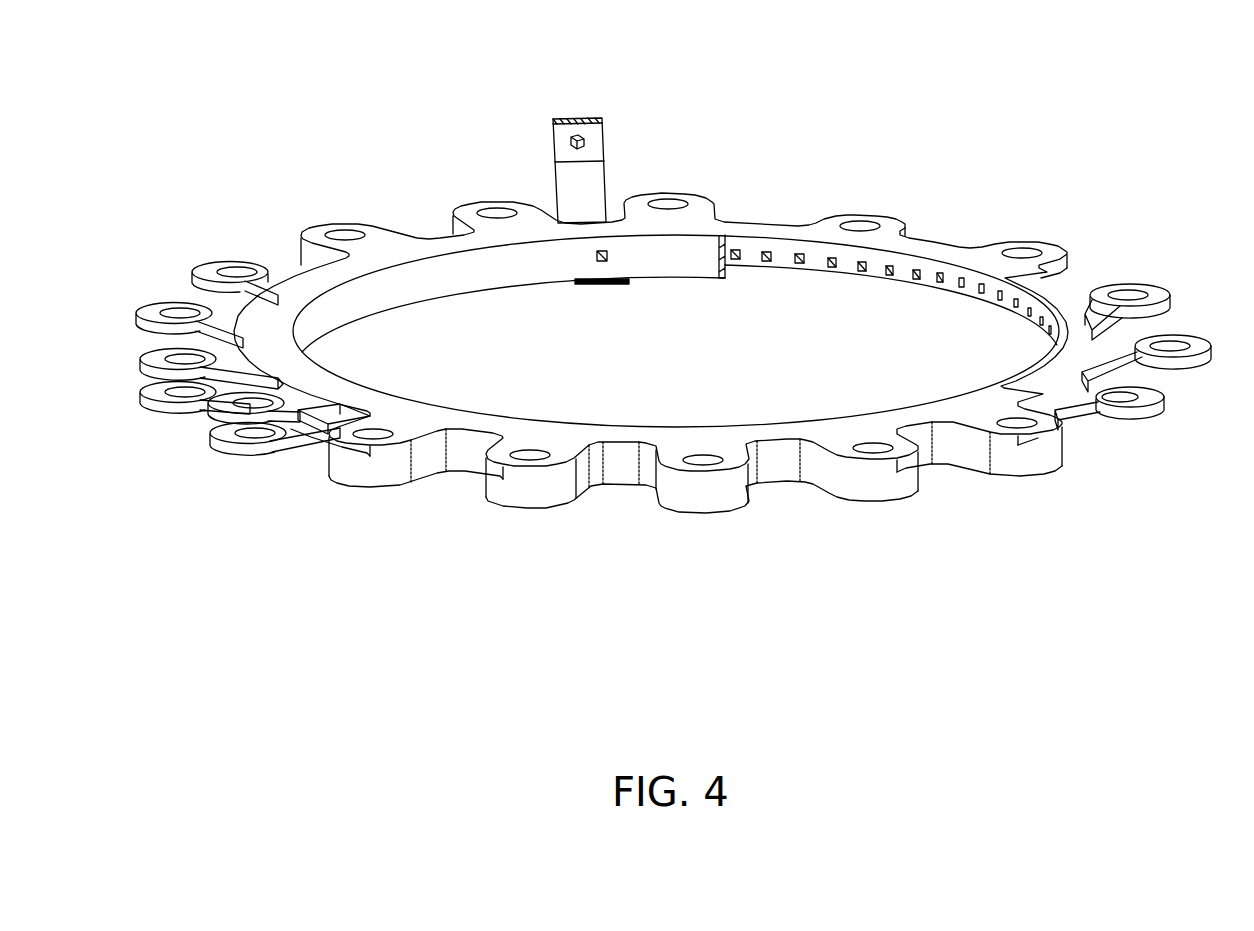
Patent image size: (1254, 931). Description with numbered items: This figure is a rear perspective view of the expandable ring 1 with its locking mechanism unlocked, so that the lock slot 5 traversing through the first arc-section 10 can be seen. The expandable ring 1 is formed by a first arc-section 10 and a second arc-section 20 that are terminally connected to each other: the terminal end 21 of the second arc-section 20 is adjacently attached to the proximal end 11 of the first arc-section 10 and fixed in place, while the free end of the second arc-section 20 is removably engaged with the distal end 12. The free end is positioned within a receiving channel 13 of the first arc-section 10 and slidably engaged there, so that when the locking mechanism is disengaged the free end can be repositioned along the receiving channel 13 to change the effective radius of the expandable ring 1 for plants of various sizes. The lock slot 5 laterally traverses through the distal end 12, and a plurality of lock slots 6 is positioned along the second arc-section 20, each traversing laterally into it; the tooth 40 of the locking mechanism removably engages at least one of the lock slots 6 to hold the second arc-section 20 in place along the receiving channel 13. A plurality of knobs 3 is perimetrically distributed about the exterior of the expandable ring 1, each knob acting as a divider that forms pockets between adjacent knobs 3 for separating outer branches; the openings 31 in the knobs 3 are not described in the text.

The expandable ring 1 is at (1112, 50).
The knobs 3 is at (206, 286).
The lock slot 5 is at (600, 268).
The lock slots 6 is at (771, 264).
The first arc-section 10 is at (335, 318).
The proximal end 11 is at (1031, 497).
The distal end 12 is at (541, 96).
The receiving channel 13 is at (314, 423).
The second arc-section 20 is at (908, 246).
The terminal end 21 is at (1115, 482).
The mounting hole 31 is at (235, 272).
The tooth 40 is at (587, 150).